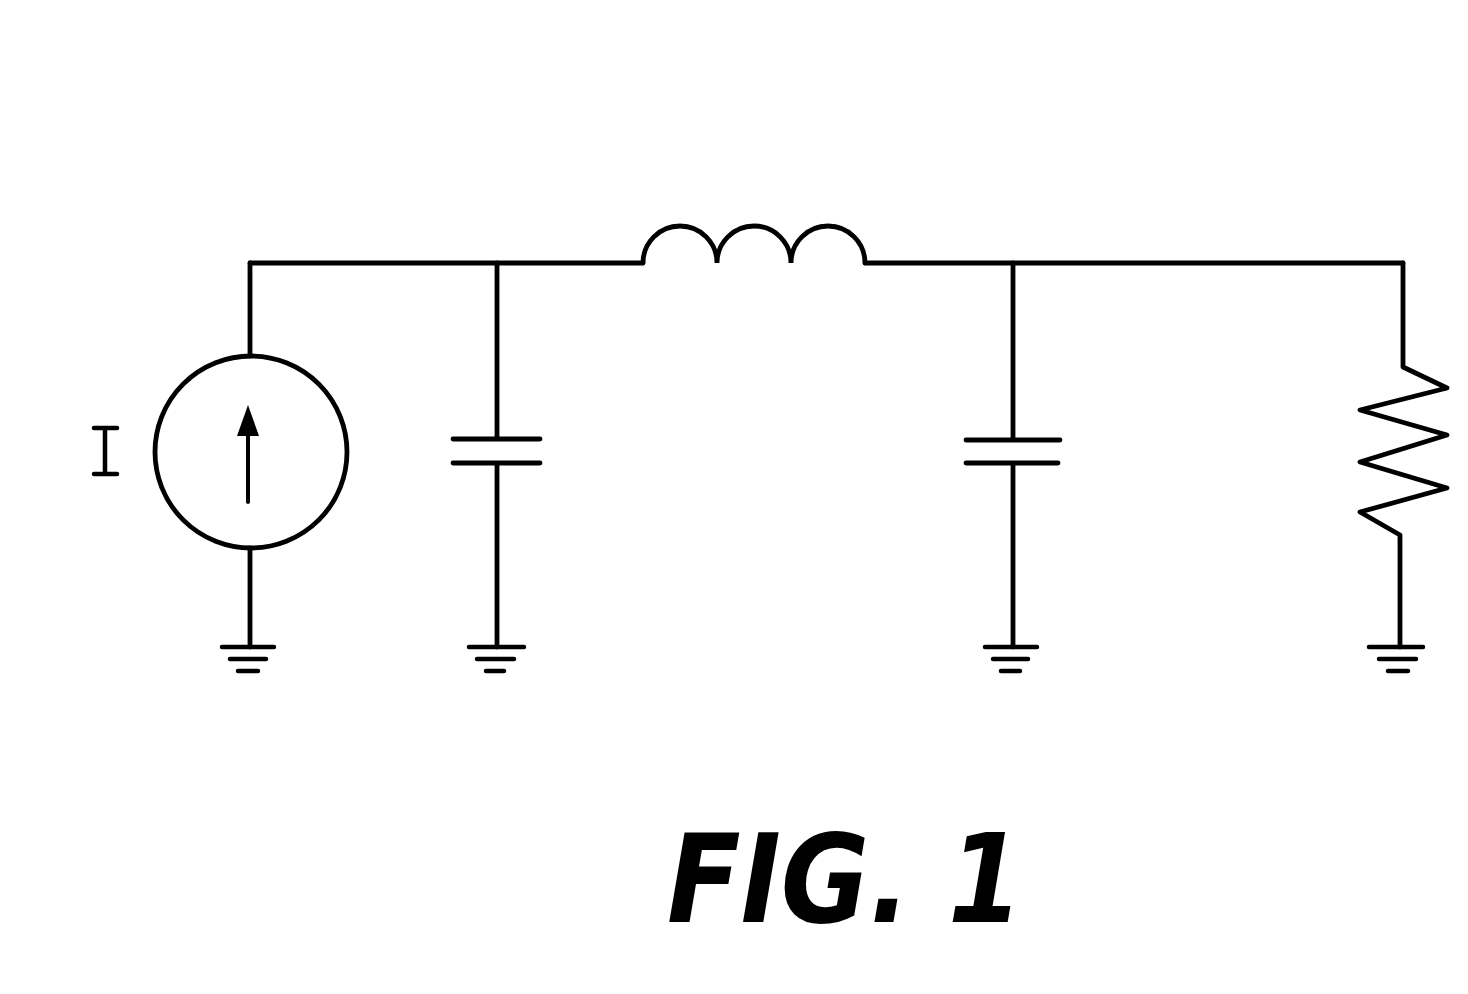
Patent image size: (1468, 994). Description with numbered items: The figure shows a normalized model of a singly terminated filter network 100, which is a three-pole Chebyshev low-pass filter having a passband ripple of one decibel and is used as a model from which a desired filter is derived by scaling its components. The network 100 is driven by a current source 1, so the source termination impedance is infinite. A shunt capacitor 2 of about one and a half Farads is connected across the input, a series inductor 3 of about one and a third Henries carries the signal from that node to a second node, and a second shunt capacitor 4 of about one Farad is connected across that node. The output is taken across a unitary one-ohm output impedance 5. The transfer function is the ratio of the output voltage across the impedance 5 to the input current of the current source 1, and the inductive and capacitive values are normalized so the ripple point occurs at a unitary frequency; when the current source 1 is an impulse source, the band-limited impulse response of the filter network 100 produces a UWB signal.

The singly terminated filter network 100 is at (1000, 139).
The current source 1 is at (187, 373).
The shunt capacitor 2 is at (473, 465).
The series inductor 3 is at (792, 252).
The shunt capacitor 4 is at (978, 467).
The output impedance 5 is at (1387, 400).